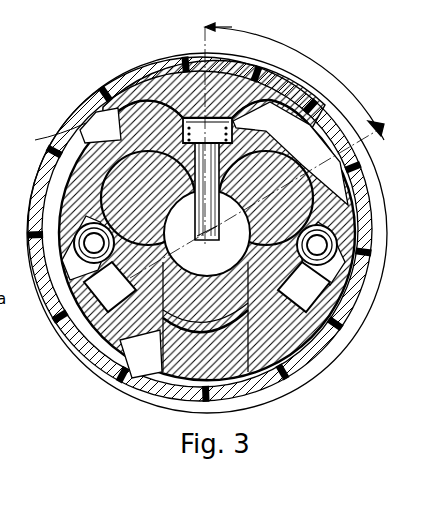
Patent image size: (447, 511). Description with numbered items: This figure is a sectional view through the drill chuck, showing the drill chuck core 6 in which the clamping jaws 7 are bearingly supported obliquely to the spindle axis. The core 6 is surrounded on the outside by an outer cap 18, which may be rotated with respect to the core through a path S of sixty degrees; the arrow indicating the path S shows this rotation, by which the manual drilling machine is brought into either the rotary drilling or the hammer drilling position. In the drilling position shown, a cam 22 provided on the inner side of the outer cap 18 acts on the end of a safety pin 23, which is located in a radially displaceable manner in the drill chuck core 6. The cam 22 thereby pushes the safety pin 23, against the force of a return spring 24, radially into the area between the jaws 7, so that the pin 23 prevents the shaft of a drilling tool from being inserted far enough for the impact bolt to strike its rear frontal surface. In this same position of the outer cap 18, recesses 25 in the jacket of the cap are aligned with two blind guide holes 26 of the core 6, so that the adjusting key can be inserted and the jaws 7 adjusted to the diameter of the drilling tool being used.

The drill chuck core 6 is at (199, 243).
The clamping jaws 7 is at (195, 222).
The outer cap 18 is at (277, 397).
The cam 22 is at (188, 88).
The safety pin 23 is at (210, 228).
The return spring 24 is at (180, 112).
The recesses 25 is at (93, 372).
The blind guide holes 26 is at (95, 297).
The path S is at (314, 63).